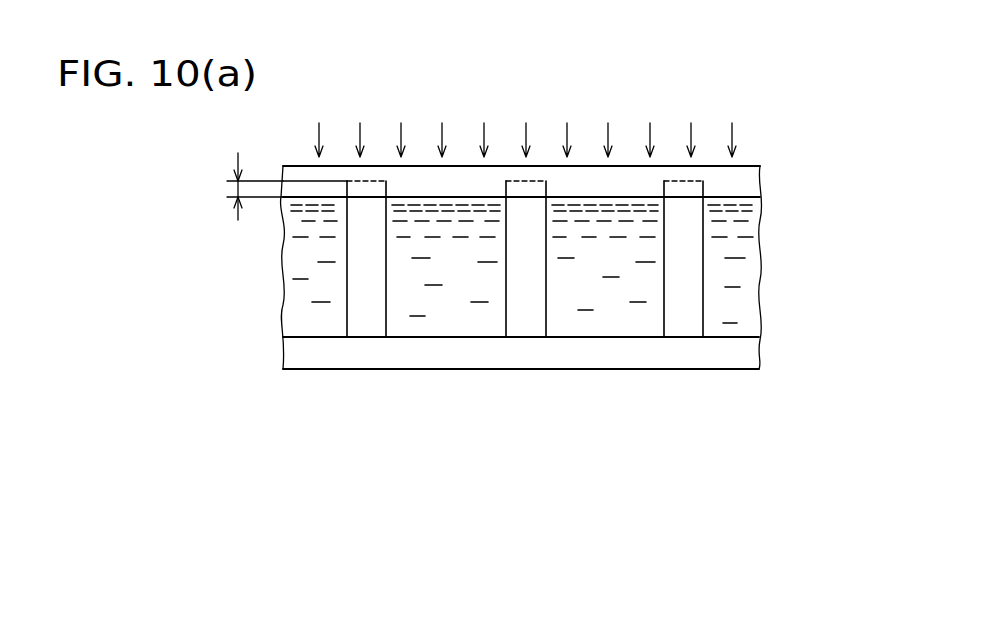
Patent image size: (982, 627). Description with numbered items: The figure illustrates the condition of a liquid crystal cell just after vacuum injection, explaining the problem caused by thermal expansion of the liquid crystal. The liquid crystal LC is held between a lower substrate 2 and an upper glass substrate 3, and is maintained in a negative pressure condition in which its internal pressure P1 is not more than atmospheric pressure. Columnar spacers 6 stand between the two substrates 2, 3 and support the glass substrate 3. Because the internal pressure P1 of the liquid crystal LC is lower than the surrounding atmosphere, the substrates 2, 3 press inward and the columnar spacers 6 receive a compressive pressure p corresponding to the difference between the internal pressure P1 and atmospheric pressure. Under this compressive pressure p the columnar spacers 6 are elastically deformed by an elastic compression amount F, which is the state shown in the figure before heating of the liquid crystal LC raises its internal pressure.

The substrate 2 is at (377, 358).
The glass substrate 3 is at (740, 180).
The columnar spacers 6 is at (692, 306).
The elastic compression amount F is at (227, 189).
The compressive pressure p is at (527, 130).
The internal pressure of the liquid crystal P1 is at (462, 310).
The liquid crystal LC is at (608, 310).